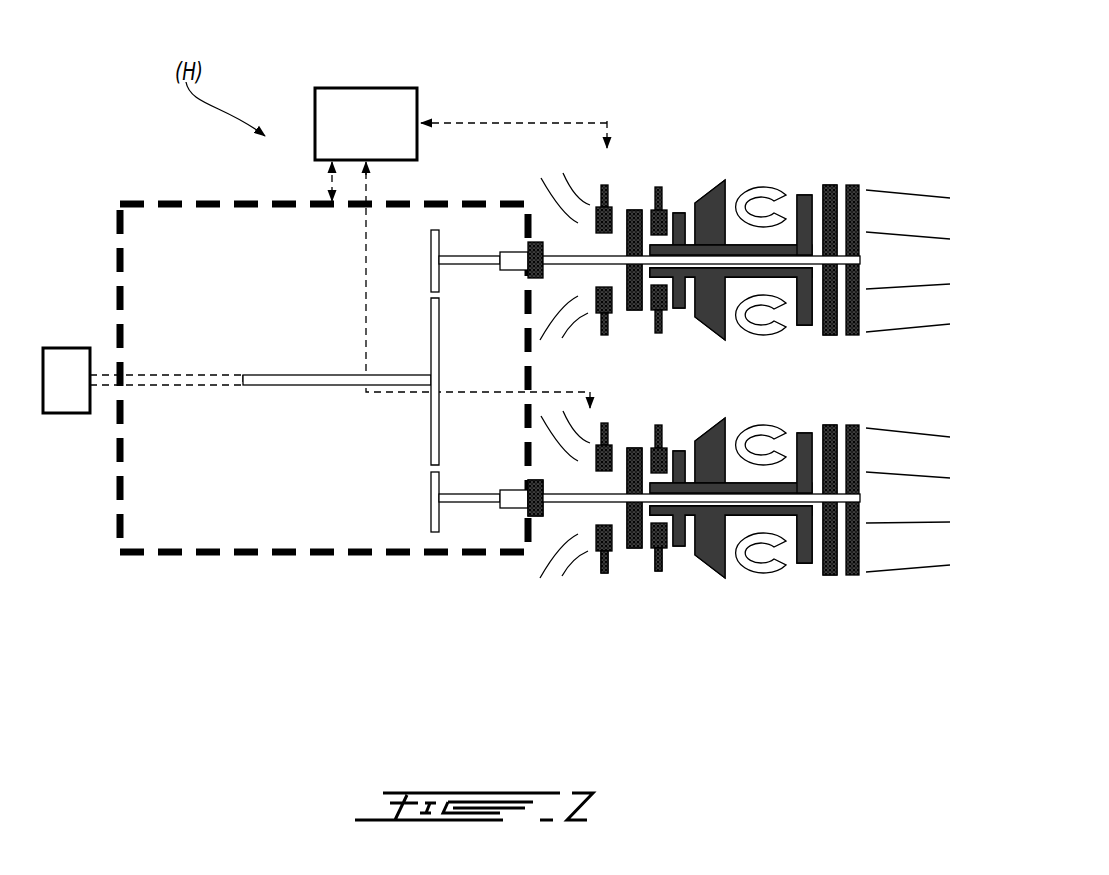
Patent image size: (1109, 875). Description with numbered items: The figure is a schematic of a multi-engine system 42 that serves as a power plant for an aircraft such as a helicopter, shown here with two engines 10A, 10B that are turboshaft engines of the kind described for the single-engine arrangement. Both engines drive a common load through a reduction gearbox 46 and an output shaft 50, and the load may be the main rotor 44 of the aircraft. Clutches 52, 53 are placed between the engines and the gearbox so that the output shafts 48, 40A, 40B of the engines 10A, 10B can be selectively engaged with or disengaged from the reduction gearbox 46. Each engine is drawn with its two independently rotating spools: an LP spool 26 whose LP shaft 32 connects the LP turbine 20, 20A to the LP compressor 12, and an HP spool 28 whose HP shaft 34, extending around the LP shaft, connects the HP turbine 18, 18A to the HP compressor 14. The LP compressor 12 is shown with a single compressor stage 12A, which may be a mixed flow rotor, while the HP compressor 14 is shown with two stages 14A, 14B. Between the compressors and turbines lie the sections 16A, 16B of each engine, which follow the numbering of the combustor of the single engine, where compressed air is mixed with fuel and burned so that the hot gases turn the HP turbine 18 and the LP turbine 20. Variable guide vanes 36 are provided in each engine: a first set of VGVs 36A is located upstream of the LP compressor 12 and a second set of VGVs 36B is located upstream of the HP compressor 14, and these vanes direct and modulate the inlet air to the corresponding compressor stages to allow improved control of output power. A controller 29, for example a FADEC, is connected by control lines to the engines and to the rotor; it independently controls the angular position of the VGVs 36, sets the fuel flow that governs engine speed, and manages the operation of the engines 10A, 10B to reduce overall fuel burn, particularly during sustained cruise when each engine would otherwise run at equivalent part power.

The engine 10A is at (831, 101).
The engine 10B is at (804, 642).
The LP compressor 12 is at (633, 210).
The compressor stage 12A is at (634, 379).
The HP compressor 14 is at (663, 168).
The HP compressor stage 14A is at (703, 205).
The HP compressor stage 14B is at (705, 445).
The stator body 16A is at (758, 588).
The stator body 16B is at (762, 344).
The HP turbine 18 is at (788, 170).
The HP turbine 18A is at (800, 192).
The LP turbine 20 is at (830, 337).
The LP turbine 20A is at (853, 185).
The LP spool 26 is at (872, 264).
The HP spool 28 is at (735, 232).
The controller 29 is at (418, 102).
The LP shaft 32 is at (702, 262).
The HP shaft 34 is at (786, 276).
The variable guide vanes 36 is at (602, 582).
The first set of VGVs 36A is at (597, 320).
The second set of VGVs 36B is at (651, 338).
The output shaft 40A is at (565, 257).
The output shaft 40B is at (586, 556).
The multi-engine system 42 is at (170, 146).
The main rotor 44 is at (68, 348).
The reduction gearbox 46 is at (248, 557).
The output shaft 48 is at (472, 255).
The output shaft 50 is at (100, 386).
The clutch 52 is at (515, 481).
The clutch 53 is at (540, 231).